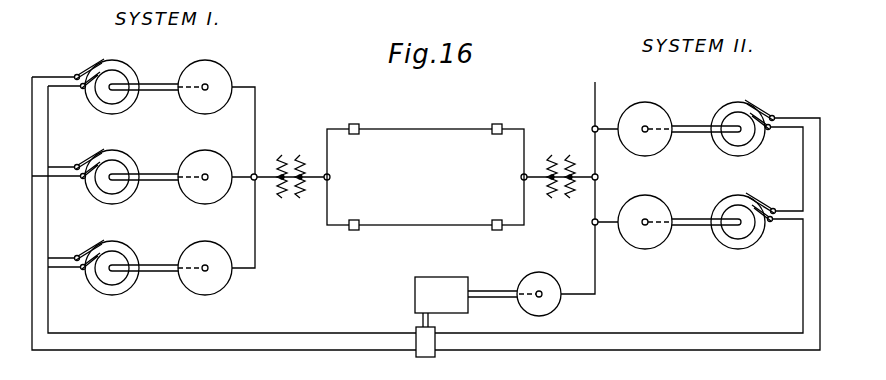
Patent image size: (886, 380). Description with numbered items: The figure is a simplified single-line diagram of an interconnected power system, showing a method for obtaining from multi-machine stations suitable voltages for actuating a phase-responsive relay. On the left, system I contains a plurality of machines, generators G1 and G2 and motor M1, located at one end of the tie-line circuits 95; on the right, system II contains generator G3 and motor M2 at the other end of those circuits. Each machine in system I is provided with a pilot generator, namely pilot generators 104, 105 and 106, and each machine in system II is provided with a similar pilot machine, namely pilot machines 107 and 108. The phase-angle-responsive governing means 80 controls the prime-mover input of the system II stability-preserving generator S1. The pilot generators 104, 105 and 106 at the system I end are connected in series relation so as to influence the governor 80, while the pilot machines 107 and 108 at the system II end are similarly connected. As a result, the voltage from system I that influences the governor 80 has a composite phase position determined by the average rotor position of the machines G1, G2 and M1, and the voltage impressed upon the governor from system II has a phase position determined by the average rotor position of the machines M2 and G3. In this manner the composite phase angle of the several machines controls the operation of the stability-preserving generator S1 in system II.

The pilot generator 104 is at (133, 57).
The pilot generator 105 is at (133, 151).
The pilot generator 106 is at (133, 242).
The pilot machine 107 is at (735, 102).
The pilot machine 108 is at (730, 200).
The tie-line circuits 95 is at (432, 178).
The phase-angle-responsive governing means 80 is at (422, 357).
The generator G1 is at (243, 62).
The motor M1 is at (235, 152).
The generator G2 is at (238, 246).
The generator G3 is at (676, 95).
The motor M2 is at (648, 193).
The stability-preserving generator S1 is at (565, 277).